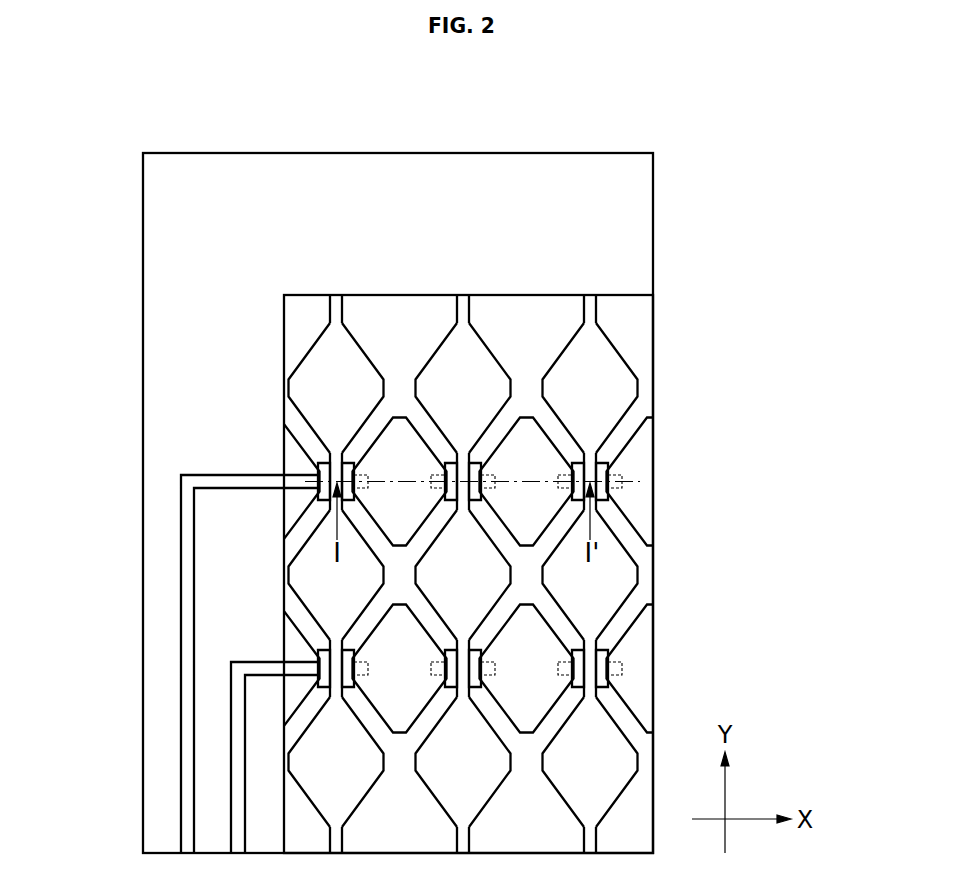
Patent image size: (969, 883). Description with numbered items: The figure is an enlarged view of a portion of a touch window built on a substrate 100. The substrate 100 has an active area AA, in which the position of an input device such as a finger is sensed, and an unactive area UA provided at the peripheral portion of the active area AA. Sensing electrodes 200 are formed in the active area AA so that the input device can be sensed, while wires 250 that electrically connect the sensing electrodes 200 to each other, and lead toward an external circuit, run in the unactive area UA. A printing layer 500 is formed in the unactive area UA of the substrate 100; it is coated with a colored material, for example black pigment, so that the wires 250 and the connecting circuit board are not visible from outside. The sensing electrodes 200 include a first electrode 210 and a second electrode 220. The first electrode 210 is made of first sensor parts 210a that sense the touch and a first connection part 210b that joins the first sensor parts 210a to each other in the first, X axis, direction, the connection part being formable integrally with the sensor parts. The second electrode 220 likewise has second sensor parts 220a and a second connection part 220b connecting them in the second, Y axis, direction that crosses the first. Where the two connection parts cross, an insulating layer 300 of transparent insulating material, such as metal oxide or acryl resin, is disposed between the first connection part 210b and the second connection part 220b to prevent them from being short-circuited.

The substrate 100 is at (648, 222).
The unactive area UA is at (422, 173).
The active area AA is at (626, 297).
The printing layer 500 is at (163, 380).
The wires 250 is at (185, 573).
The sensing electrodes 200 is at (553, 574).
The second electrode 220 is at (551, 574).
The second sensor parts 220a is at (480, 357).
The second connection part 220b is at (462, 462).
The first electrode 210 is at (520, 575).
The first sensor parts 210a is at (543, 450).
The first connection part 210b is at (490, 489).
The insulating layer 300 is at (481, 463).